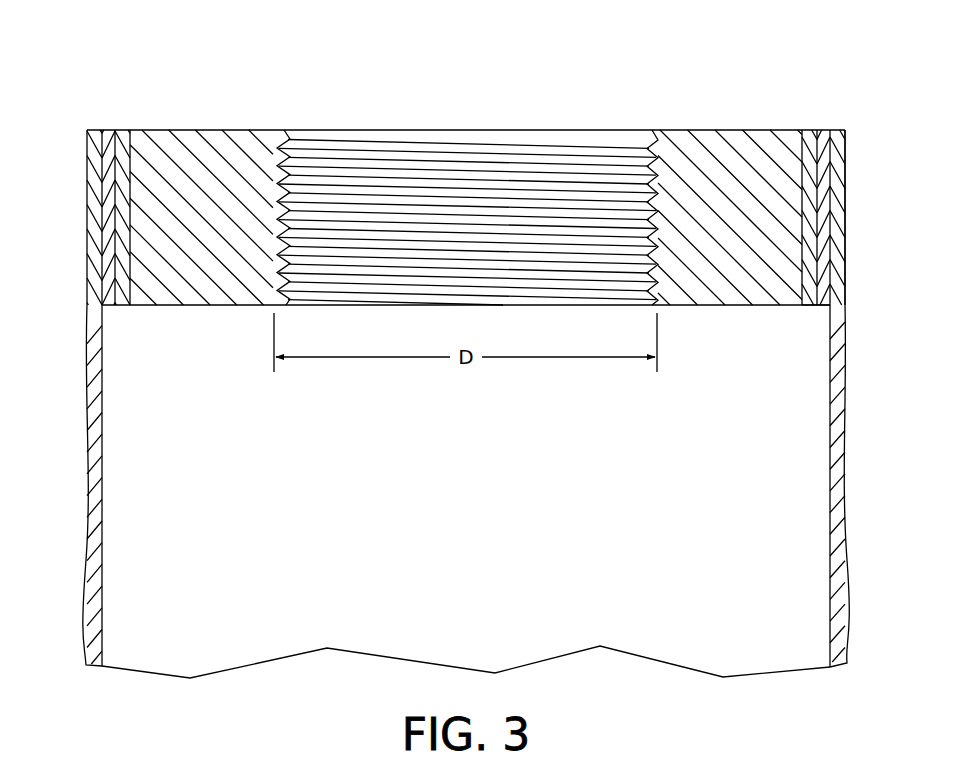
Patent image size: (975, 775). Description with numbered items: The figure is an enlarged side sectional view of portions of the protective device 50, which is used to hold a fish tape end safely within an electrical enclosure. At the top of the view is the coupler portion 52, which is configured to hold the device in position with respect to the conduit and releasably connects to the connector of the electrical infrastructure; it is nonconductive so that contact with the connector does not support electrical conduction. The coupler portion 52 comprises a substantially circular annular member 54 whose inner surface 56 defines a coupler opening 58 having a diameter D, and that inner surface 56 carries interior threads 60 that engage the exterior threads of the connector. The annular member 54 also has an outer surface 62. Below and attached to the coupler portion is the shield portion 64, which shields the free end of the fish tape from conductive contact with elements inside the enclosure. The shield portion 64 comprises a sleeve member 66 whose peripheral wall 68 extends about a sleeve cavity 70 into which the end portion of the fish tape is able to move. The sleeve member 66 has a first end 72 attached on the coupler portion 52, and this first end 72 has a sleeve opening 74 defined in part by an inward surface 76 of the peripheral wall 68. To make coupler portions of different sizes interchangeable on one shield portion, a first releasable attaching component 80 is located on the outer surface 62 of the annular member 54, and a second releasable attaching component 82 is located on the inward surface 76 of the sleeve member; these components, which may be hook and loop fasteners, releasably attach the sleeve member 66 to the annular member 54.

The protective device 50 is at (275, 93).
The coupler portion 52 is at (146, 117).
The annular member 54 is at (220, 130).
The inner surface 56 is at (281, 150).
The coupler opening 58 is at (526, 160).
The interior threads 60 is at (642, 180).
The outer surface 62 is at (802, 266).
The shield portion 64 is at (122, 435).
The sleeve member 66 is at (850, 445).
The peripheral wall 68 is at (850, 537).
The sleeve cavity 70 is at (743, 620).
The first end 72 is at (858, 167).
The sleeve opening 74 is at (822, 307).
The inward surface 76 is at (830, 148).
The first releasable attaching component 80 is at (810, 165).
The second releasable attaching component 82 is at (820, 203).